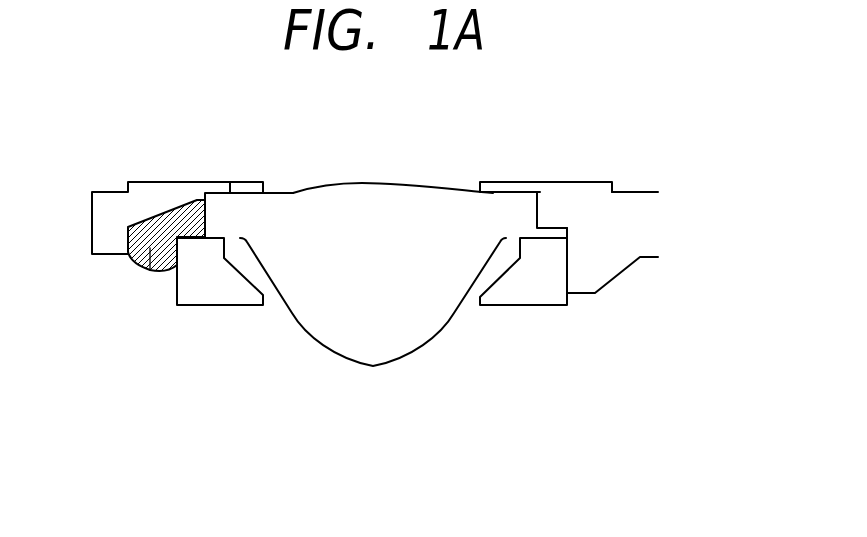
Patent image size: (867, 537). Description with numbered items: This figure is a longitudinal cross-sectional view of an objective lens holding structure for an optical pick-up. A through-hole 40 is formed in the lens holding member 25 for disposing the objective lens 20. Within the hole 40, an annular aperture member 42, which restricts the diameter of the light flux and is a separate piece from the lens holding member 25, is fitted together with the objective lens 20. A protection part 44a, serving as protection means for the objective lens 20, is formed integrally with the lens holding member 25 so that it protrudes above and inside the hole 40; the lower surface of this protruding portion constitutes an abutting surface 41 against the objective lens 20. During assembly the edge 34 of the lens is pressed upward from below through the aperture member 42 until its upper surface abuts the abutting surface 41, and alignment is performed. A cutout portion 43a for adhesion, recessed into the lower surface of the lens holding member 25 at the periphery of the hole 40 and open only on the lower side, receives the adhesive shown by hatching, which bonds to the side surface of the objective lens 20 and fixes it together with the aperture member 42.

The objective lens 20 is at (380, 200).
The edge 34 is at (243, 215).
The protection part 44a is at (522, 187).
The lens holding member 25 is at (620, 222).
The cutout portion for adhesion 43a is at (148, 273).
The aperture member 42 is at (213, 283).
The abutting surface 41 is at (497, 193).
The through-hole 40 is at (507, 257).